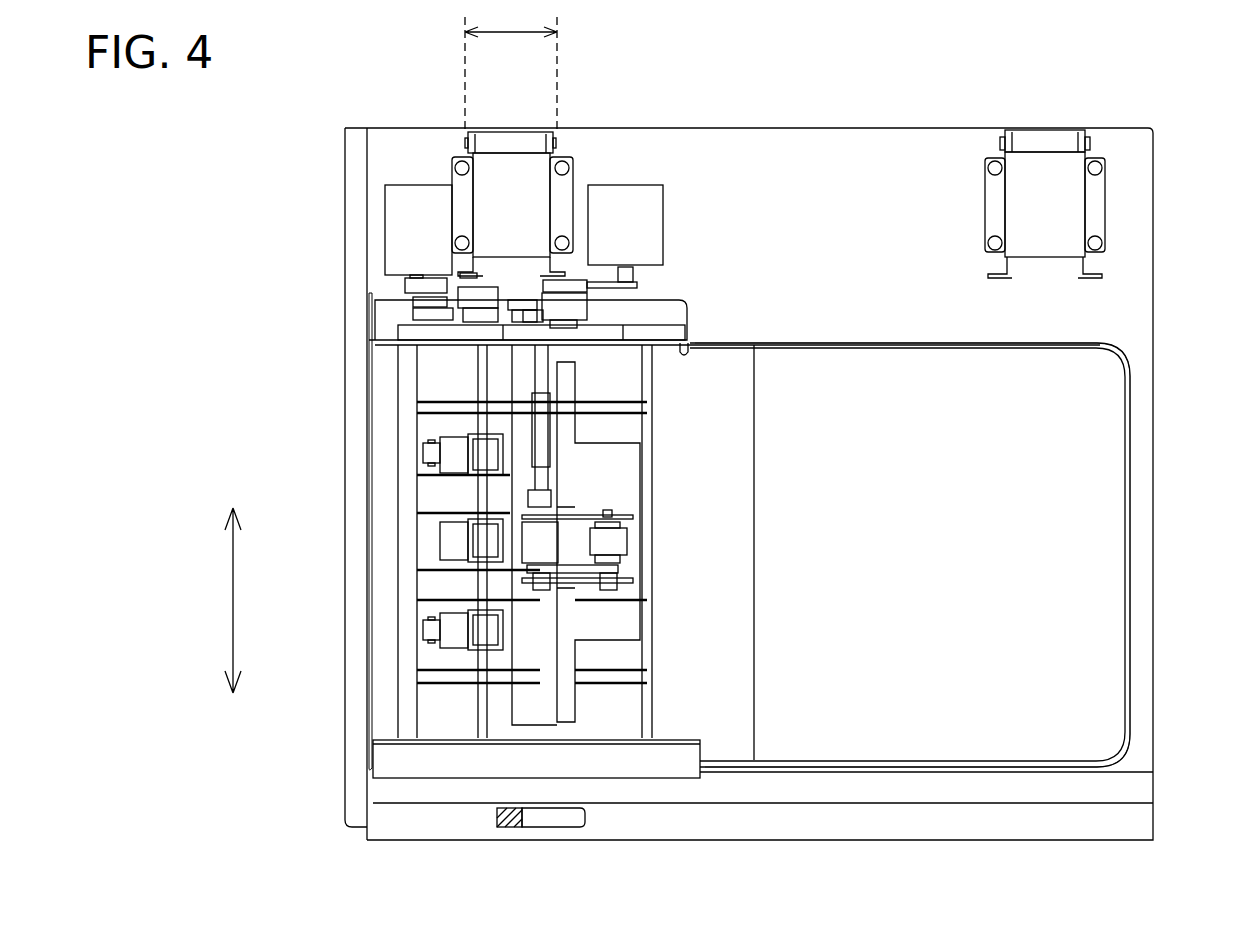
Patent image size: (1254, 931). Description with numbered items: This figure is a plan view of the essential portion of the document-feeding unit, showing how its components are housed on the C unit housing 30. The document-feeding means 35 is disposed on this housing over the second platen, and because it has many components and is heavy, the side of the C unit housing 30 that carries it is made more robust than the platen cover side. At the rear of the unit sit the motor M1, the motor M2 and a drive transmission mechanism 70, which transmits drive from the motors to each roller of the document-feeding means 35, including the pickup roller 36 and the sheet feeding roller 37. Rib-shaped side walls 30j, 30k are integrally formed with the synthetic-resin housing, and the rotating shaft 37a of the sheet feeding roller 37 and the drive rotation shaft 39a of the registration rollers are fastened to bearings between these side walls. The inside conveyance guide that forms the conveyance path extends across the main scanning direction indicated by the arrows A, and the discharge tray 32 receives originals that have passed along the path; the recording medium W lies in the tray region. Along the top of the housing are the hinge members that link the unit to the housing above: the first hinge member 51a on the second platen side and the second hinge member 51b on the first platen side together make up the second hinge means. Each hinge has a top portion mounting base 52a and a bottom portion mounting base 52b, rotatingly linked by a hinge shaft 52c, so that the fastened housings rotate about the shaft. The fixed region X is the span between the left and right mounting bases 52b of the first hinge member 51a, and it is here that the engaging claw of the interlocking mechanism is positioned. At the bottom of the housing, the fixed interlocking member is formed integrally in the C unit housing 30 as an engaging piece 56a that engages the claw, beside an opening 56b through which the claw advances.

The C unit housing 30 is at (812, 127).
The drive transmission mechanism 70 is at (722, 303).
The motor M1 is at (395, 228).
The motor M2 is at (663, 215).
The first hinge member 51a is at (435, 80).
The second hinge member 51b is at (993, 84).
The top portion mounting base 52a is at (525, 160).
The bottom portion mounting base 52b is at (462, 157).
The hinge shaft 52c is at (494, 140).
The fixed region X is at (511, 68).
The document-feeding means 35 is at (385, 440).
The rib-shaped side wall 30j is at (443, 345).
The drive rotation shaft 39a is at (483, 583).
The rotating shaft 37a is at (545, 480).
The sheet feeding roller 37 is at (548, 540).
The pickup roller 36 is at (622, 541).
The discharge tray 32 is at (1090, 440).
The recording medium W is at (1088, 708).
The rib-shaped side wall 30k is at (447, 737).
The engaging piece 56a is at (507, 830).
The opening 56b is at (560, 830).
The main scanning direction A is at (223, 600).